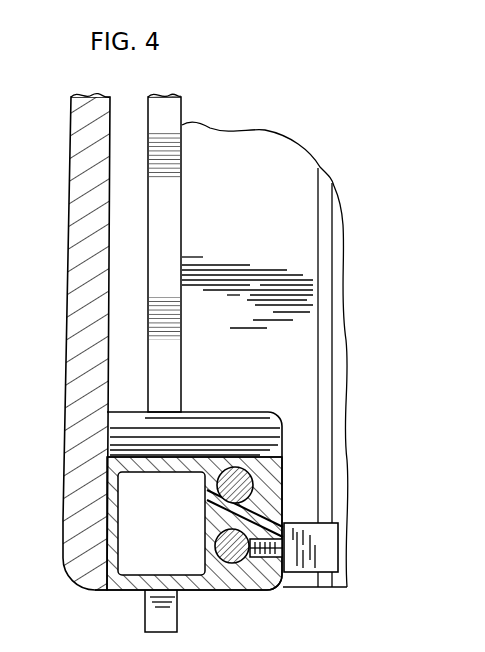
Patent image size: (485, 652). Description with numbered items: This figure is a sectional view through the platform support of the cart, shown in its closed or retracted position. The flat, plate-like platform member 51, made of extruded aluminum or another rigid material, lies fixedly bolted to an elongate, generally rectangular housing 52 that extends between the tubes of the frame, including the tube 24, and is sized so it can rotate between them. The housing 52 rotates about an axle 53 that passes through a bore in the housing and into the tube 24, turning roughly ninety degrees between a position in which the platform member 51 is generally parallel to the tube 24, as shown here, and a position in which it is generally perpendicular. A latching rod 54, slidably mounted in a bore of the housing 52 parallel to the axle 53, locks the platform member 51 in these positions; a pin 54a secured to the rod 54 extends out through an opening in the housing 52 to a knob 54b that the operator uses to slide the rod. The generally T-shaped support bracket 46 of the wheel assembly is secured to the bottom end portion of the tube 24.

The tube 24 is at (260, 147).
The support bracket 46 is at (163, 117).
The platform member 51 is at (80, 197).
The housing 52 is at (132, 585).
The axle 53 is at (243, 468).
The latching rod 54 is at (236, 578).
The pin 54a is at (228, 561).
The knob 54b is at (302, 563).